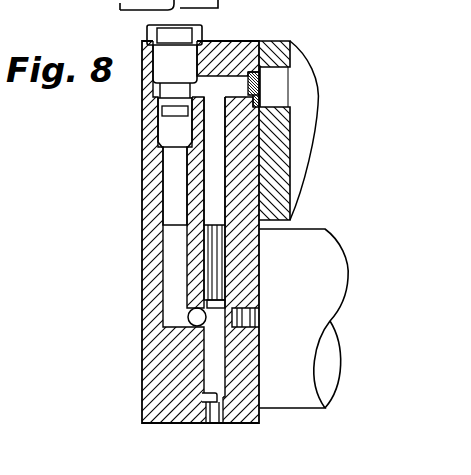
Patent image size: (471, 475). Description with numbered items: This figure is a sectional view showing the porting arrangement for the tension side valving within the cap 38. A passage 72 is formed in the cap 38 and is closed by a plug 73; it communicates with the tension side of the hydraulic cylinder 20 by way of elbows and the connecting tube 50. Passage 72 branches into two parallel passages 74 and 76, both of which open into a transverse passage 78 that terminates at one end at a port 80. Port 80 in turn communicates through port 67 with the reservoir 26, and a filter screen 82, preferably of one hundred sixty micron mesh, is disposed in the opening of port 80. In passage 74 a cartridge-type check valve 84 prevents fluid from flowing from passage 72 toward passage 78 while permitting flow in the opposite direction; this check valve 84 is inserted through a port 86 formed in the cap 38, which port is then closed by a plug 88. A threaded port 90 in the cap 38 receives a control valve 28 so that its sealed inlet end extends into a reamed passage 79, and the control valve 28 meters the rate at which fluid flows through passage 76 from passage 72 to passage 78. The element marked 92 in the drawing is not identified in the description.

The hydraulic cylinder 20 is at (334, 236).
The reservoir 26 is at (295, 48).
The control valve 28 is at (186, 27).
The cap 38 is at (142, 292).
The connecting tube 50 is at (68, 0).
The port 67 is at (261, 107).
The passage 72 is at (222, 316).
The plug 73 is at (258, 318).
The passage 74 is at (220, 176).
The passage 76 is at (162, 187).
The transverse passage 78 is at (228, 78).
The reamed passage 79 is at (162, 133).
The port 80 is at (253, 77).
The filter screen 82 is at (262, 110).
The cartridge-type check valve 84 is at (223, 238).
The port 86 is at (202, 394).
The plug 88 is at (225, 397).
The threaded port 90 is at (150, 62).
The ball check 92 is at (188, 316).